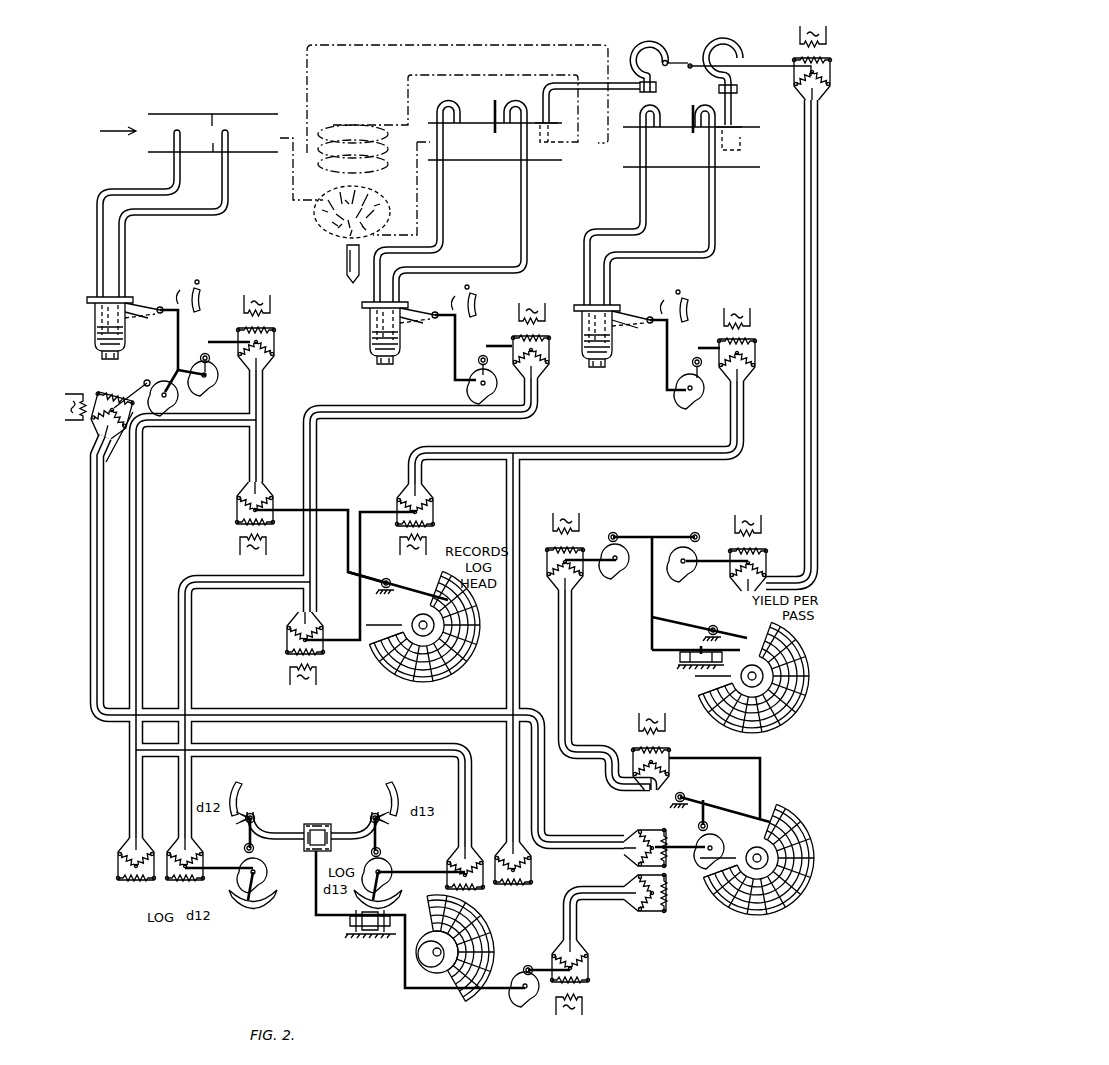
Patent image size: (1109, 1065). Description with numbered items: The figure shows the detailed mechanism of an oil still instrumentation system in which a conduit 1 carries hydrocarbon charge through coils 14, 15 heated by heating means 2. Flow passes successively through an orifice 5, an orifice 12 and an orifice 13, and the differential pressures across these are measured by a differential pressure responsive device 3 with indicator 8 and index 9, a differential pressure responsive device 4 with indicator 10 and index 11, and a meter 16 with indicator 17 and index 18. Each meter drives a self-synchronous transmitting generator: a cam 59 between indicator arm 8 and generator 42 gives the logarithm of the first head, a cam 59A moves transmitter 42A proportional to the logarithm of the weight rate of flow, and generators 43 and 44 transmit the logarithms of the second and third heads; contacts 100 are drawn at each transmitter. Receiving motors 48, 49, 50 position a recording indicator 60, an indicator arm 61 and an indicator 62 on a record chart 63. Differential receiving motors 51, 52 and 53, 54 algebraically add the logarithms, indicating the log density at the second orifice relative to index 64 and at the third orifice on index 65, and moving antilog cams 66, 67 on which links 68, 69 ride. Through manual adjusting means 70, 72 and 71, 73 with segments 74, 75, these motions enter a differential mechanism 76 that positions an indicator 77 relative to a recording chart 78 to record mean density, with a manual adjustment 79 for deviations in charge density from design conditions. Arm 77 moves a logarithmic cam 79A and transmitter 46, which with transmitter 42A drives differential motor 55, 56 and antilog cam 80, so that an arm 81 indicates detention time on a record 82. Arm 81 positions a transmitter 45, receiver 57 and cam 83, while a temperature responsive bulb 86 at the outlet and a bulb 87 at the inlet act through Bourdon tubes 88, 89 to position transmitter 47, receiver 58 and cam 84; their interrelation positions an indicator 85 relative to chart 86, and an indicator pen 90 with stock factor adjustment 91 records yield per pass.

The conduit 1 is at (238, 152).
The heating means 2 is at (342, 268).
The differential pressure responsive device 3 is at (123, 336).
The differential pressure responsive device 4 is at (399, 342).
The orifice 5 is at (213, 127).
The indicator 8 is at (168, 324).
The index 9 is at (203, 295).
The indicator 10 is at (454, 333).
The index 11 is at (481, 301).
The orifice 12 is at (488, 132).
The orifice 13 is at (686, 133).
The coil 14 is at (318, 230).
The coil 15 is at (338, 124).
The meter 16 is at (612, 344).
The indicator 17 is at (659, 339).
The index 18 is at (694, 305).
The transmitting generator 42 is at (267, 332).
The transmitter 42A is at (106, 422).
The transmitting generator 43 is at (515, 353).
The transmitting generator 44 is at (725, 358).
The transmitter 45 is at (695, 765).
The transmitter 46 is at (582, 977).
The transmitter 47 is at (803, 63).
The receiving motor 48 is at (241, 518).
The receiving motor 49 is at (293, 648).
The receiving motor 50 is at (405, 519).
The receiving motor 51 is at (135, 867).
The receiving motor 52 is at (184, 867).
The receiving motor 53 is at (461, 861).
The receiving motor 54 is at (523, 863).
The differential motor 55 is at (664, 902).
The differential motor 56 is at (659, 853).
The receiver 57 is at (557, 551).
The receiver 58 is at (756, 553).
The cam 59 is at (210, 379).
The cam 59A is at (172, 393).
The recording indicator 60 is at (350, 572).
The indicator arm 61 is at (376, 590).
The indicator 62 is at (388, 580).
The record chart 63 is at (460, 678).
The index 64 is at (254, 904).
The index 65 is at (387, 890).
The cam 66 is at (270, 862).
The antilog cam 67 is at (393, 862).
The link 68 is at (248, 844).
The link 69 is at (380, 844).
The manual adjusting means 70 is at (252, 800).
The manual adjusting means 71 is at (375, 804).
The manual adjusting means 72 is at (264, 816).
The manual adjusting means 73 is at (350, 822).
The manual adjusting means 74 is at (230, 790).
The manual adjusting means 75 is at (410, 792).
The differential mechanism 76 is at (306, 820).
The indicator 77 is at (422, 915).
The index and recording chart 78 is at (501, 950).
The manual adjustment 79 is at (386, 940).
The logarithmic cam 79A is at (539, 998).
The cam 80 is at (689, 847).
The arm 81 is at (746, 804).
The record 82 is at (767, 920).
The cam 83 is at (630, 549).
The cam 84 is at (707, 550).
The indicator 85 is at (746, 604).
The temperature responsive bulb 86 is at (742, 139).
The temperature responsive bulb 87 is at (558, 150).
The Bourdon tube 88 is at (726, 38).
The Bourdon tube 89 is at (648, 38).
The indicator pen 90 is at (676, 662).
The stock factor adjustment 91 is at (696, 667).
The contact 100 is at (449, 355).